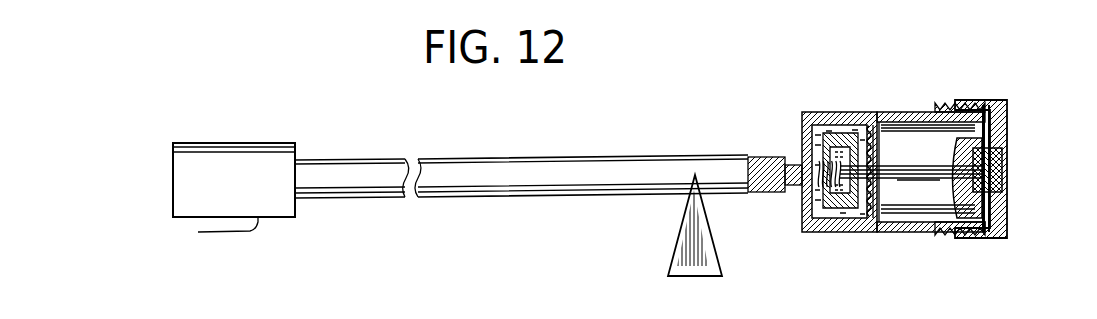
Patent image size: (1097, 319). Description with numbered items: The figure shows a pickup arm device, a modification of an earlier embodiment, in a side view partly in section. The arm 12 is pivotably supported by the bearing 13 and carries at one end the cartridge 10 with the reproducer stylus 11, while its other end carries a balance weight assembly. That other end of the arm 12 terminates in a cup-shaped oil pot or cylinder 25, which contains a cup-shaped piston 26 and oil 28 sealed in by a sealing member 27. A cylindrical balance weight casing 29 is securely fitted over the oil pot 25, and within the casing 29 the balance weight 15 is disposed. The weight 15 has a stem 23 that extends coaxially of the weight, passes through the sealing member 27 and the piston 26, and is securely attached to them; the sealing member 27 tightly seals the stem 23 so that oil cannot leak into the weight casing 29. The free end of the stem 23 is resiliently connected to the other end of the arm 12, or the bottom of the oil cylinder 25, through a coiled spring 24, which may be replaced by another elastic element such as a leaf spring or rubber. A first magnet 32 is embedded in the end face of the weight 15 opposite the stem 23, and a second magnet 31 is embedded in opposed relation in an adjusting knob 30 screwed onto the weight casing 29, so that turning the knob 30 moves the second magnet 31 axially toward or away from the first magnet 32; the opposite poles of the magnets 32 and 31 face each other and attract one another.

The cartridge 10 is at (232, 152).
The reproducer stylus 11 is at (197, 231).
The arm 12 is at (483, 164).
The bearing 13 is at (680, 256).
The balance weight 15 is at (935, 166).
The stem 23 is at (897, 181).
The coiled spring 24 is at (812, 197).
The oil pot 25 is at (828, 224).
The cup-shaped piston 26 is at (840, 147).
The sealing member 27 is at (874, 140).
The oil 28 is at (812, 140).
The balance weight casing 29 is at (880, 233).
The adjusting knob 30 is at (1006, 134).
The second magnet 31 is at (1008, 172).
The first magnet 32 is at (975, 198).